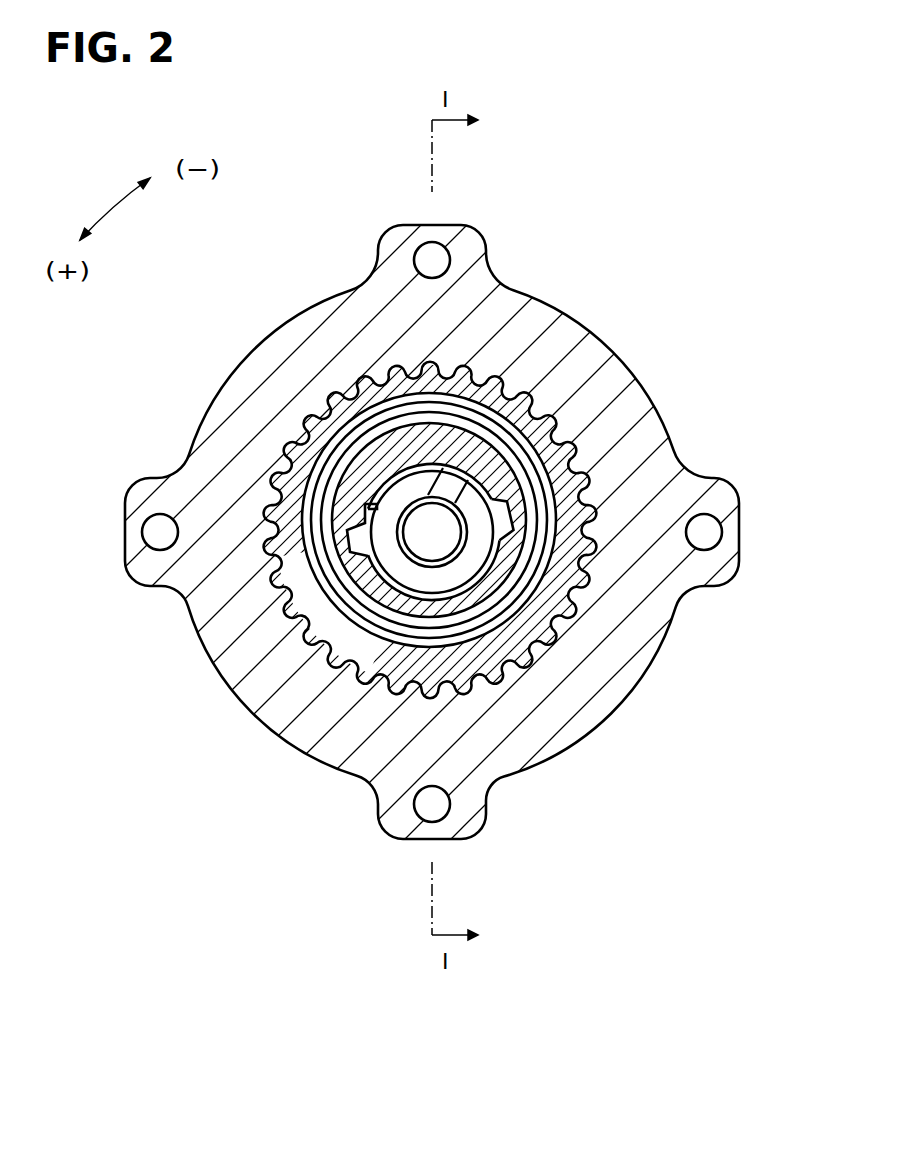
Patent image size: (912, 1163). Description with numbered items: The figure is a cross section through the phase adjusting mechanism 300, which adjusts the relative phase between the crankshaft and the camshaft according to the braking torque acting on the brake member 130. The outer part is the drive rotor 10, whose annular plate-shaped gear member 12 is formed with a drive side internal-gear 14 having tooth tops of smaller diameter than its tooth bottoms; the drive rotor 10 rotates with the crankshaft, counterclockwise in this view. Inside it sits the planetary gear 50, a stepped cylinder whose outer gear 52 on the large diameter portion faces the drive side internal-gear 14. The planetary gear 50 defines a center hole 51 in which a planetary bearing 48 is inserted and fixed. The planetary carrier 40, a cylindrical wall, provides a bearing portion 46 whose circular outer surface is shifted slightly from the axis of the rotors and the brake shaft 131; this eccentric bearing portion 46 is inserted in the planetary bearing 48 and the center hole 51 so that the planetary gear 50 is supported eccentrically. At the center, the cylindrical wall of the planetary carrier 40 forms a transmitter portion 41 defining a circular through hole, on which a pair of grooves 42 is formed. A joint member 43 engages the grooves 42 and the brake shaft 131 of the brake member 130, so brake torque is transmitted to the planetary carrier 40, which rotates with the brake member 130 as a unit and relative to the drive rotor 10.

The phase adjusting mechanism 300 is at (640, 305).
The drive rotor 10 is at (432, 532).
The gear member 12 is at (300, 343).
The drive side internal-gear 14 is at (283, 431).
The planetary carrier 40 is at (417, 475).
The planetary gear 50 is at (340, 519).
The outer gear 52 is at (300, 455).
The center hole 51 is at (473, 392).
The planetary bearing 48 is at (543, 572).
The bearing portion 46 is at (352, 493).
The transmitter portion 41 is at (367, 505).
The grooves 42 is at (372, 545).
The joint member 43 is at (467, 567).
The brake member 130 is at (366, 354).
The brake shaft 131 is at (412, 502).